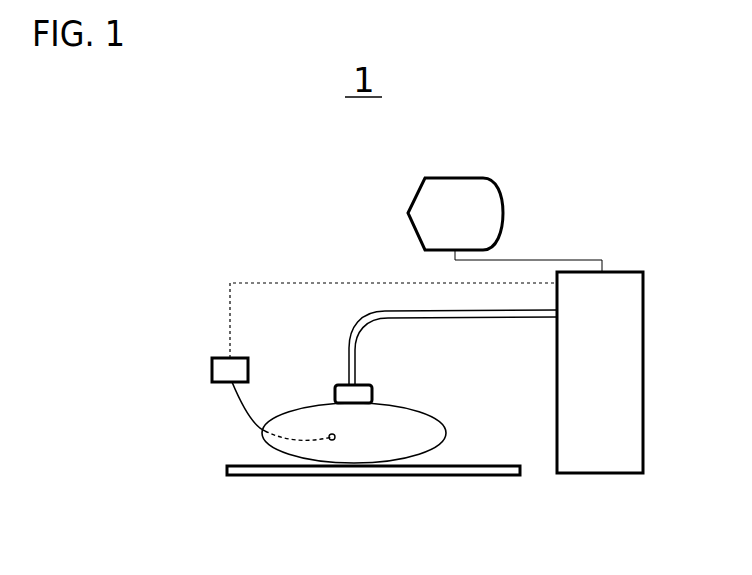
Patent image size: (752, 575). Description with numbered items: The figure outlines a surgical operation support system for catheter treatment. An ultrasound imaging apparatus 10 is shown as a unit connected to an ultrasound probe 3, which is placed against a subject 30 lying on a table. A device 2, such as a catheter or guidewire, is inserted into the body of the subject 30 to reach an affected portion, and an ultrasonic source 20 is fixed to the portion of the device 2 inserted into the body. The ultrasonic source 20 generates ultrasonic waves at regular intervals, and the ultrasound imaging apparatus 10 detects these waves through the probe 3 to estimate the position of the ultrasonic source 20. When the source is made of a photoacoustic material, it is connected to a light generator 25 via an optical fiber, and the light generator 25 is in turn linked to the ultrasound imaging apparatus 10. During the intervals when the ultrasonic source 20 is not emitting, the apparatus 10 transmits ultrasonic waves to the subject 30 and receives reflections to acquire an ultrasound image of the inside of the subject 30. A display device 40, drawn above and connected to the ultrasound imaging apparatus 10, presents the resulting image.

The ultrasound imaging apparatus 10 is at (634, 372).
The camera 40 is at (505, 202).
The light generator 25 is at (346, 354).
The ultrasound probe 3 is at (446, 356).
The subject 30 is at (383, 410).
The device 2 is at (248, 432).
The ultrasonic source 20 is at (289, 497).